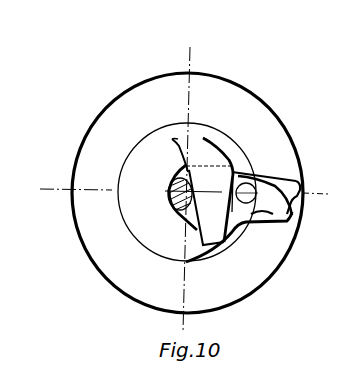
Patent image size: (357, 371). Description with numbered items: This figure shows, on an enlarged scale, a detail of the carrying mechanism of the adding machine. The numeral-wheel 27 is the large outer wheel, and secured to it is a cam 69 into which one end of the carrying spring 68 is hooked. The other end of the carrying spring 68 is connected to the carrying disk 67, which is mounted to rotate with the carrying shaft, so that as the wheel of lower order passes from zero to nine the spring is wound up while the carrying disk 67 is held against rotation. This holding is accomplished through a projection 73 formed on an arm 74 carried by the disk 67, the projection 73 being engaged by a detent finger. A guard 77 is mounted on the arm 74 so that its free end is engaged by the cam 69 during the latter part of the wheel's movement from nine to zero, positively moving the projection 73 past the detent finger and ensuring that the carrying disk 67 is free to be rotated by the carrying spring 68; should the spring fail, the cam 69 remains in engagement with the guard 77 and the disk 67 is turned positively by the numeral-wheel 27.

The numeral-wheel 27 is at (187, 193).
The carrying disk 67 is at (200, 191).
The carrying spring 68 is at (243, 176).
The arm 74 is at (248, 180).
The guard 77 is at (257, 196).
The cam 69 is at (304, 205).
The projection 73 is at (262, 214).